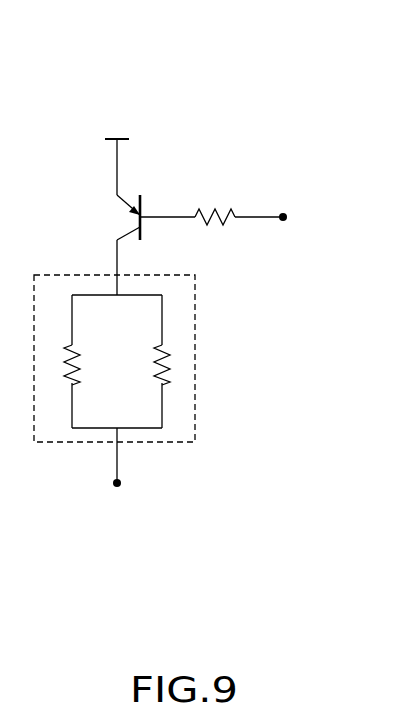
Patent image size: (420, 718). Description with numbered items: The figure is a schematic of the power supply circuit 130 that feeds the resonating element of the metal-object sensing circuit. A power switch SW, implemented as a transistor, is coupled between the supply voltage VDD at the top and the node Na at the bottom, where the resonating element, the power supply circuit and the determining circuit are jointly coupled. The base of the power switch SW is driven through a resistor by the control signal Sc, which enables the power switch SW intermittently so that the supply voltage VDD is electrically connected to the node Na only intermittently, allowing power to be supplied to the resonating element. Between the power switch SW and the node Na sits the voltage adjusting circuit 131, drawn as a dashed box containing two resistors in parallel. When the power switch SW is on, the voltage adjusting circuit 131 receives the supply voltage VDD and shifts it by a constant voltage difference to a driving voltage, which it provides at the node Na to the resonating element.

The power supply circuit 130 is at (200, 299).
The voltage adjusting circuit 131 is at (198, 435).
The supply voltage VDD is at (117, 153).
The power switch SW is at (105, 245).
The control signal Sc is at (234, 217).
The node Na is at (120, 487).